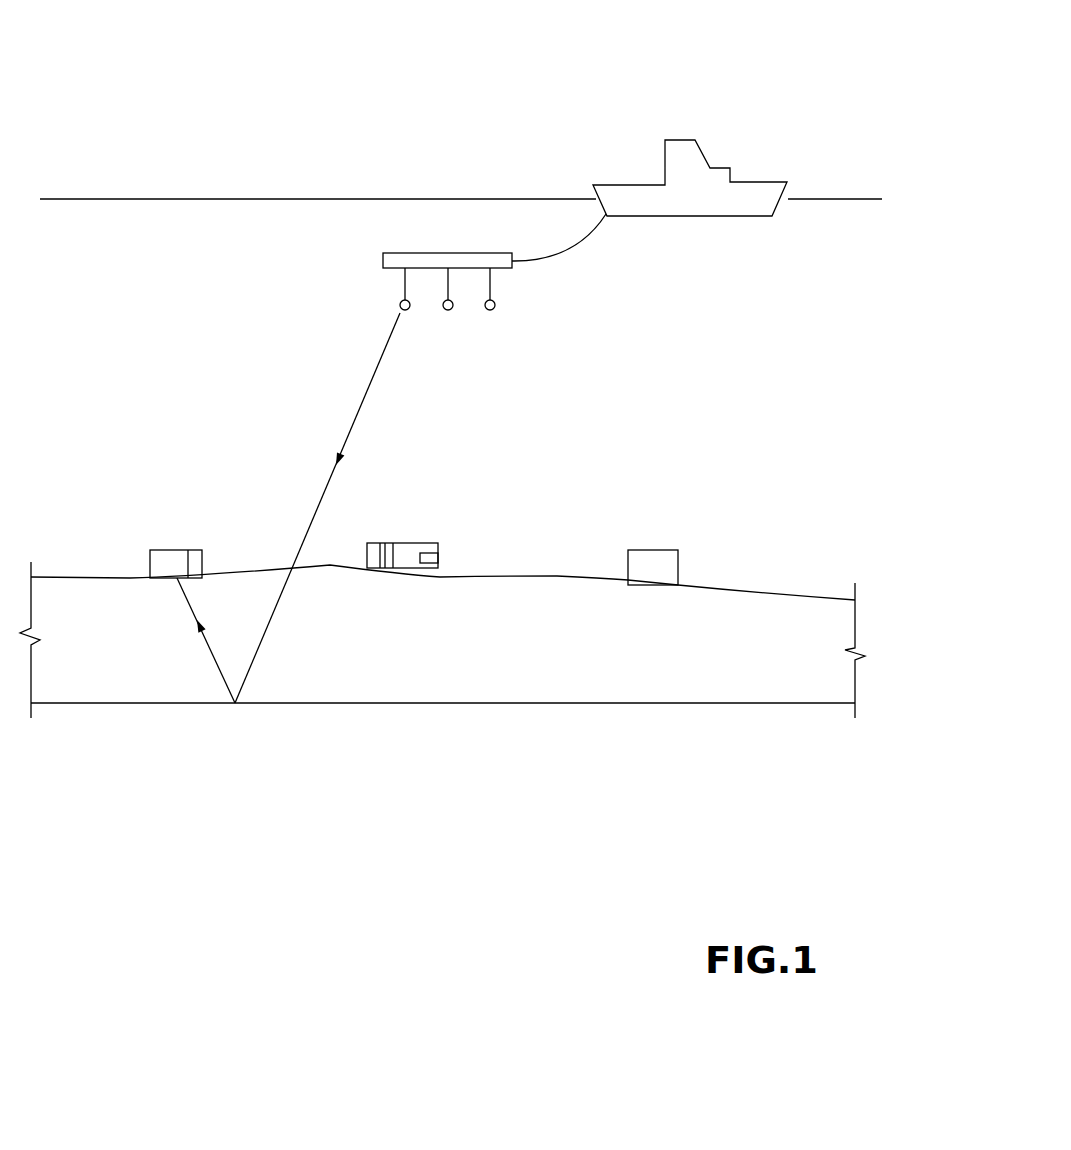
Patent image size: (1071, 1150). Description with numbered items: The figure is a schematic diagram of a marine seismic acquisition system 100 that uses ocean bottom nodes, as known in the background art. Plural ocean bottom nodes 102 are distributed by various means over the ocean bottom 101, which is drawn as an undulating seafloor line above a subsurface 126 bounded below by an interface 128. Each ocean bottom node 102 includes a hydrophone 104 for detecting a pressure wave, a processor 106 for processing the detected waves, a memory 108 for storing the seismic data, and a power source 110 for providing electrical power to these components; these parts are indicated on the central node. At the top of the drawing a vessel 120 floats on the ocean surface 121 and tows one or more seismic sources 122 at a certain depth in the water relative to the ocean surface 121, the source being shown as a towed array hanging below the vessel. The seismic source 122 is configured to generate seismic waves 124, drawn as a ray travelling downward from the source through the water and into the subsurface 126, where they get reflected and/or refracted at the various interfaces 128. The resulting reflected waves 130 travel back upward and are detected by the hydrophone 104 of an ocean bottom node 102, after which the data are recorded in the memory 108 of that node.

The seismic acquisition system 100 is at (832, 40).
The ocean bottom 101 is at (738, 590).
The ocean bottom node 102 is at (165, 535).
The hydrophone 104 is at (442, 556).
The processor 106 is at (374, 568).
The memory 108 is at (388, 570).
The power source 110 is at (394, 570).
The vessel 120 is at (716, 148).
The ocean surface 121 is at (198, 198).
The seismic source 122 is at (452, 240).
The seismic waves 124 is at (365, 378).
The subsurface 126 is at (549, 657).
The interfaces 128 is at (296, 702).
The reflected waves 130 is at (210, 665).